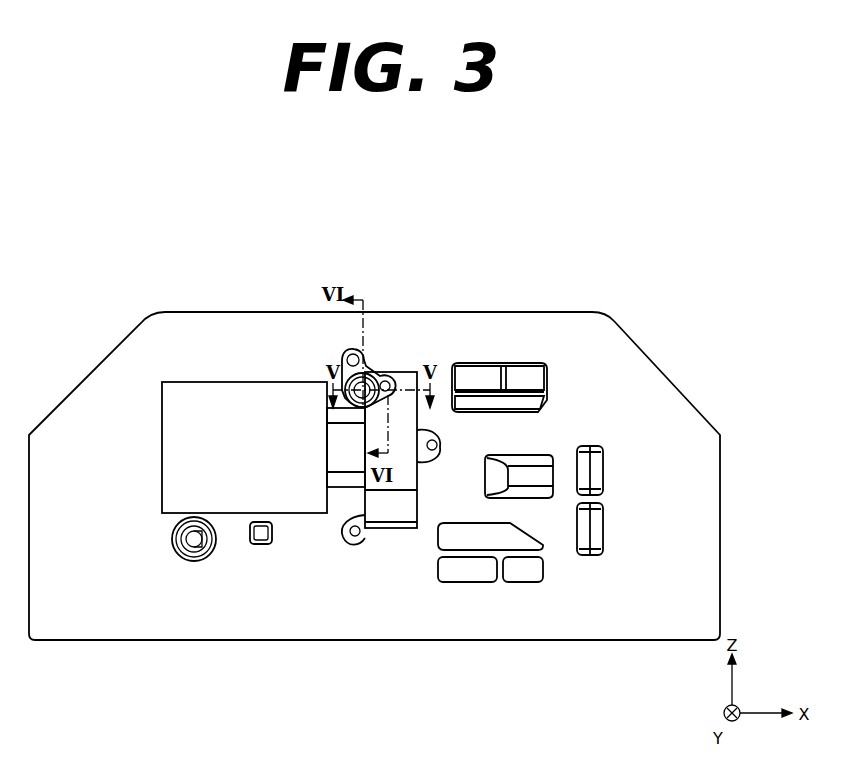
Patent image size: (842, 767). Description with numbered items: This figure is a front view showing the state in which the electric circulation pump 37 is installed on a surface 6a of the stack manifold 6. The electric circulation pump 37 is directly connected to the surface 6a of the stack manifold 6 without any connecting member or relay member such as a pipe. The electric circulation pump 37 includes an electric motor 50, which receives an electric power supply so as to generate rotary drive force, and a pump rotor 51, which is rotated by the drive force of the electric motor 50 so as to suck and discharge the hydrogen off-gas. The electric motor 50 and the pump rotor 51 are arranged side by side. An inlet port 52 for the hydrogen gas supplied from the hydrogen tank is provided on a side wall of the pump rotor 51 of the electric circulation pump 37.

The stack manifold 6 is at (612, 316).
The surface of the stack manifold 6a is at (640, 368).
The electric circulation pump 37 is at (277, 376).
The electric motor 50 is at (231, 500).
The pump rotor 51 is at (402, 482).
The inlet port 52 is at (348, 397).